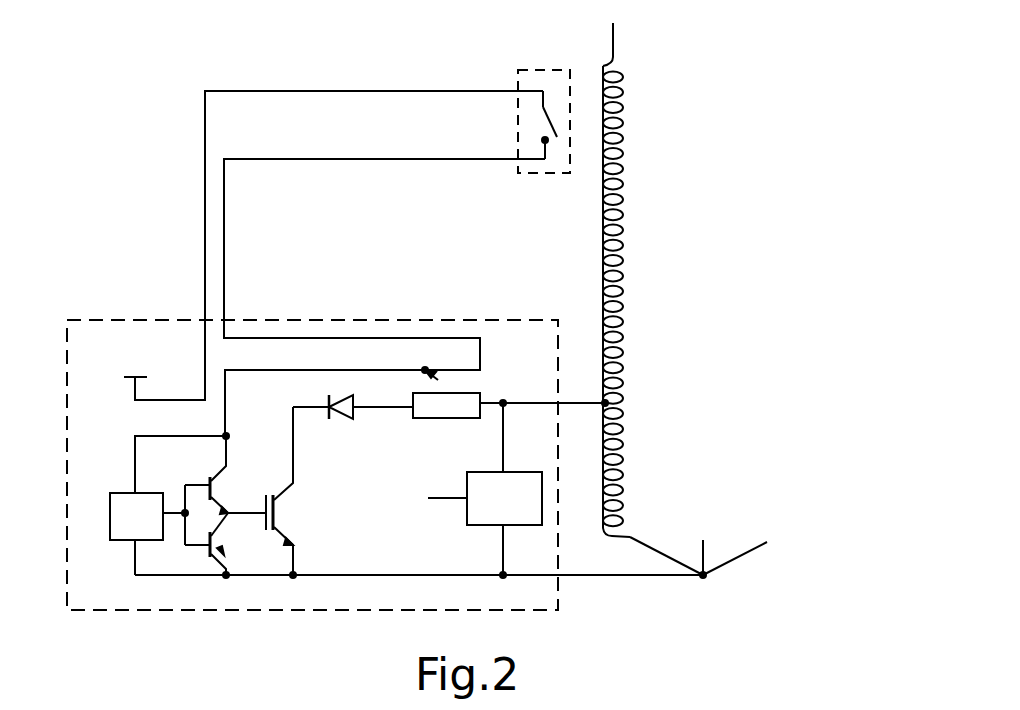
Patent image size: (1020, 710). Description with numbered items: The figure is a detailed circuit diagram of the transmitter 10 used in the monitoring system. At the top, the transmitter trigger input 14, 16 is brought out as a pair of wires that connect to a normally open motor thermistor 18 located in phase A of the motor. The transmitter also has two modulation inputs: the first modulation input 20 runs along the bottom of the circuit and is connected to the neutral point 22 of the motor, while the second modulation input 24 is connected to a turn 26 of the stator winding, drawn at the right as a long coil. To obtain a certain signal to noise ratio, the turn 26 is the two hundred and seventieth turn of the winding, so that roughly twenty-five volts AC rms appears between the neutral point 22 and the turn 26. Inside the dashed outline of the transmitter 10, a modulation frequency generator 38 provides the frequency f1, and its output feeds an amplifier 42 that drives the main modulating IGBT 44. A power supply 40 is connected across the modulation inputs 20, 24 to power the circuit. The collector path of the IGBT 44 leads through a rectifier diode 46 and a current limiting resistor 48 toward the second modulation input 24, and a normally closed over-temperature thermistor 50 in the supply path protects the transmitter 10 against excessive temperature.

The transmitter 10 is at (652, 281).
The transmitter trigger input 14 is at (204, 307).
The transmitter trigger input 16 is at (229, 306).
The normally open motor thermistor 18 is at (556, 82).
The first modulation input 20 is at (419, 593).
The neutral point 22 is at (698, 574).
The second modulation input 24 is at (542, 418).
The turn 26 is at (632, 403).
The modulation frequency generator 38 is at (113, 493).
The power supply 40 is at (469, 520).
The amplifier 42 is at (205, 508).
The main modulating IGBT 44 is at (291, 516).
The rectifier diode 46 is at (343, 420).
The current limiting resistor 48 is at (440, 420).
The normally closed over-temperature thermistor 50 is at (443, 374).